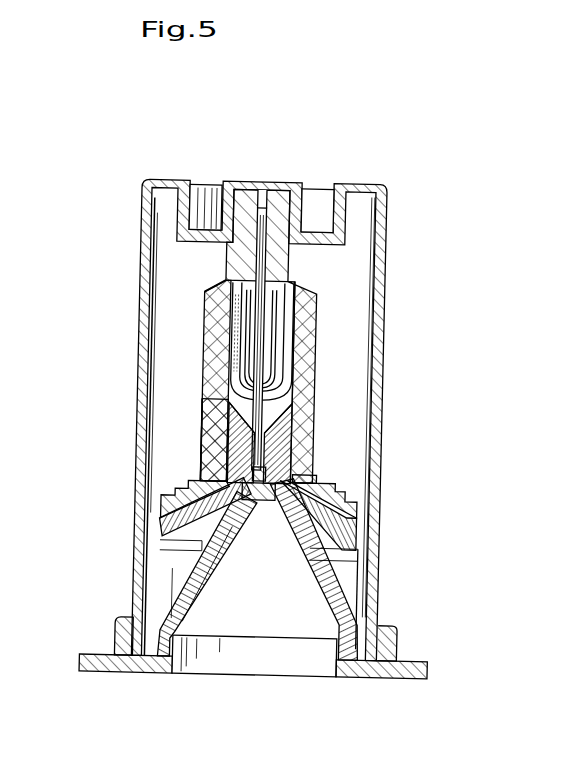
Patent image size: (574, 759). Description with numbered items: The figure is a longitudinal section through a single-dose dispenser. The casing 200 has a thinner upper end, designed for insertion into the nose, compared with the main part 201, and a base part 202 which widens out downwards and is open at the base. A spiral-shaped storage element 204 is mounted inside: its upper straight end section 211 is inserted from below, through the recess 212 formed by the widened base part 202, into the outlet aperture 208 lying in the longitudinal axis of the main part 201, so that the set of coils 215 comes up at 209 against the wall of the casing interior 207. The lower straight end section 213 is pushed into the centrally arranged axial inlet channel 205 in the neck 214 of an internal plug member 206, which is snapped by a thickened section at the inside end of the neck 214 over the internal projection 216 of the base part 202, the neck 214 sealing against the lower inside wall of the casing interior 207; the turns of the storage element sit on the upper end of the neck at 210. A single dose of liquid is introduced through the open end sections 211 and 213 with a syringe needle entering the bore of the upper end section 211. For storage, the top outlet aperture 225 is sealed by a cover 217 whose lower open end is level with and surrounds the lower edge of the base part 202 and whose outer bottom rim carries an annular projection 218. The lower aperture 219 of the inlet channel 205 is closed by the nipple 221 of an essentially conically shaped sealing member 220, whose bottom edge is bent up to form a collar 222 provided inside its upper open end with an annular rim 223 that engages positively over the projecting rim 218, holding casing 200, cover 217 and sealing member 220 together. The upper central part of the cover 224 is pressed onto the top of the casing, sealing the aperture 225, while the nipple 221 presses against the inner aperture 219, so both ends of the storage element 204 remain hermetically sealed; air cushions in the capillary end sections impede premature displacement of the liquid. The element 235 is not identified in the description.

The casing 200 is at (319, 340).
The main part of the casing 201 is at (311, 318).
The base part 202 is at (357, 503).
The spiral-shaped storage element 204 is at (234, 339).
The axial inlet channel 205 is at (213, 446).
The internal plug member 206 is at (168, 533).
The casing interior 207 is at (299, 372).
The outlet aperture 208 is at (272, 188).
The abutment of the coils against the casing interior wall 209 is at (212, 296).
The location of the turns on the neck 210 is at (300, 408).
The upper straight end section 211 is at (268, 257).
The recess 212 is at (354, 573).
The lower straight end section 213 is at (236, 418).
The neck 214 is at (290, 436).
The set of coils 215 is at (262, 358).
The internal projection 216 is at (208, 471).
The cover 217 is at (386, 210).
The annular projection 218 is at (147, 650).
The lower aperture of the inlet channel 219 is at (311, 480).
The sealing member 220 is at (224, 596).
The nipple 221 is at (270, 515).
The collar 222 is at (415, 678).
The annular thickening or rim 223 is at (127, 624).
The upper central part of the cover 224 is at (226, 183).
The top outlet aperture 225 is at (262, 188).
The valve seat 235 is at (296, 461).